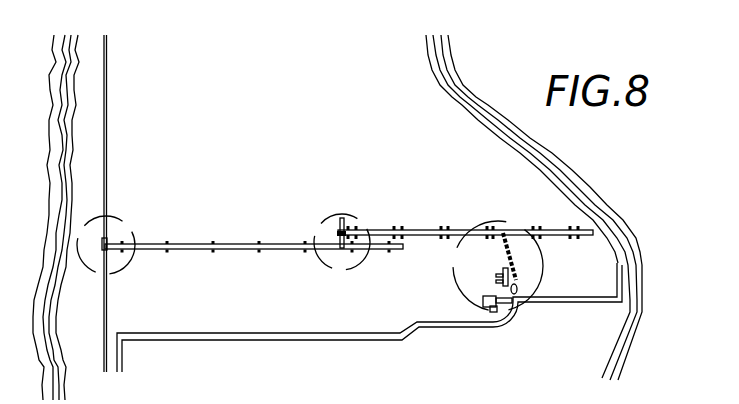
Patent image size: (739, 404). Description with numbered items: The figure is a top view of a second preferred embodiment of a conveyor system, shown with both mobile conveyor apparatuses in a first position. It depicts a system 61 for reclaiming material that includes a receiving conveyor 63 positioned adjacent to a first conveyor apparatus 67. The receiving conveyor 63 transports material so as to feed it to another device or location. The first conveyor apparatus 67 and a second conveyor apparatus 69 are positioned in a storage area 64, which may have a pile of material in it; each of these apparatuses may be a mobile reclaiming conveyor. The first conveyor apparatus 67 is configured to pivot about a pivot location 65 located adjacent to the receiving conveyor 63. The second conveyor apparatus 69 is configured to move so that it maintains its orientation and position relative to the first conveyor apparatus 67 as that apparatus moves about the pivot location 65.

The system for reclaiming material 61 is at (335, 182).
The receiving conveyor 63 is at (106, 284).
The storage area 64 is at (590, 323).
The pivot location 65 is at (138, 216).
The first conveyor apparatus 67 is at (275, 243).
The second conveyor apparatus 69 is at (425, 229).